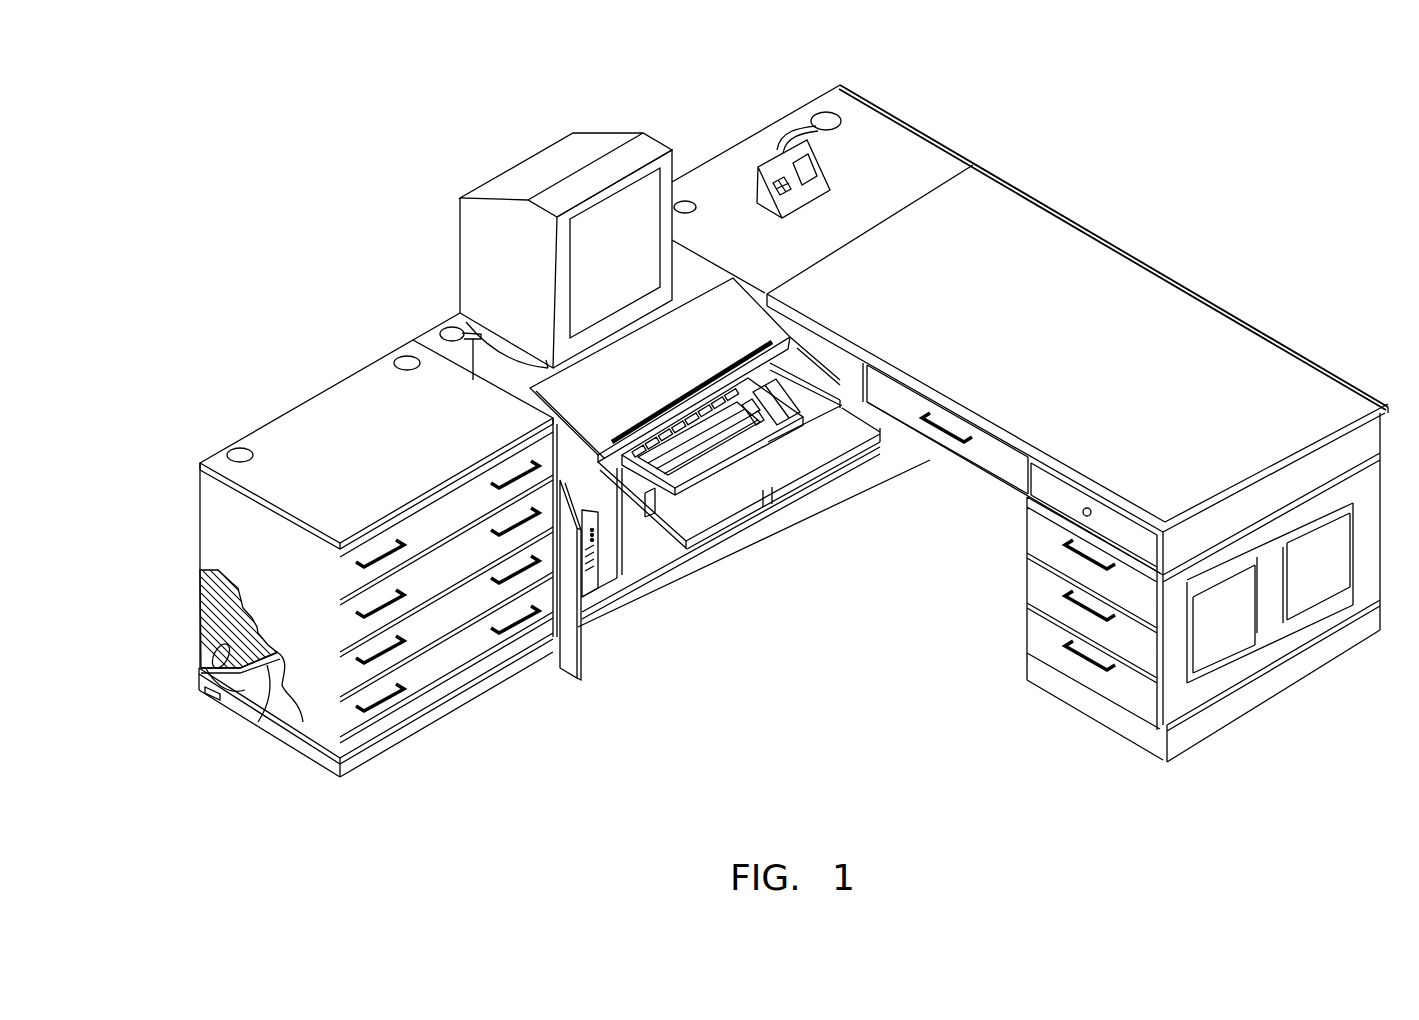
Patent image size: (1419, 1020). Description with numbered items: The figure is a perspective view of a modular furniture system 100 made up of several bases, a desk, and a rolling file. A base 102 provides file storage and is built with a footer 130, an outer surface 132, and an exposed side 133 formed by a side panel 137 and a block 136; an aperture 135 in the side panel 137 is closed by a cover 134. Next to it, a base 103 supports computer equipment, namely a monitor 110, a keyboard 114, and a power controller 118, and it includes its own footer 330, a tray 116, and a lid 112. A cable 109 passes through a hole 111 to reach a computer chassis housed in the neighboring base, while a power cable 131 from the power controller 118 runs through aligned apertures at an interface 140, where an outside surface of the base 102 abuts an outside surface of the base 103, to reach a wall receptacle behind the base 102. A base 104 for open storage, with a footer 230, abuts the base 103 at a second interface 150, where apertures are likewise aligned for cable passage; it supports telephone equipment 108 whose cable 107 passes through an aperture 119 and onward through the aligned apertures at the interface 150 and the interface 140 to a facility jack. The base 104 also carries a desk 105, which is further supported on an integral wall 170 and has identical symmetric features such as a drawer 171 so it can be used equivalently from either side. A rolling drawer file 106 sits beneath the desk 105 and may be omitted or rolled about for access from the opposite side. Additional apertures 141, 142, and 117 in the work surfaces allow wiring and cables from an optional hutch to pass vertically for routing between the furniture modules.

The furniture system 100 is at (408, 155).
The base 102 is at (305, 403).
The base 103 is at (452, 326).
The base 104 is at (777, 118).
The desk 105 is at (1180, 285).
The rolling drawer file 106 is at (1027, 583).
The cable 107 is at (796, 128).
The telephone equipment 108 is at (828, 170).
The cable 109 is at (473, 380).
The monitor 110 is at (558, 142).
The hole 111 is at (441, 332).
The lid 112 is at (680, 369).
The keyboard 114 is at (763, 455).
The tray 116 is at (687, 545).
The aperture 117 is at (693, 214).
The power controller 118 is at (598, 590).
The aperture 119 is at (838, 117).
The footer 130 is at (352, 768).
The power cable 131 is at (255, 712).
The outer surface 132 is at (318, 614).
The exposed side 133 is at (259, 826).
The cover 134 is at (198, 720).
The aperture 135 is at (208, 702).
The block 136 is at (320, 768).
The side panel 137 is at (200, 568).
The interface 140 is at (546, 655).
The aperture 141 is at (238, 449).
The aperture 142 is at (395, 363).
The interface 150 is at (768, 518).
The integral wall 170 is at (1292, 710).
The drawer 171 is at (1000, 470).
The footer 230 is at (862, 470).
The footer 330 is at (718, 550).